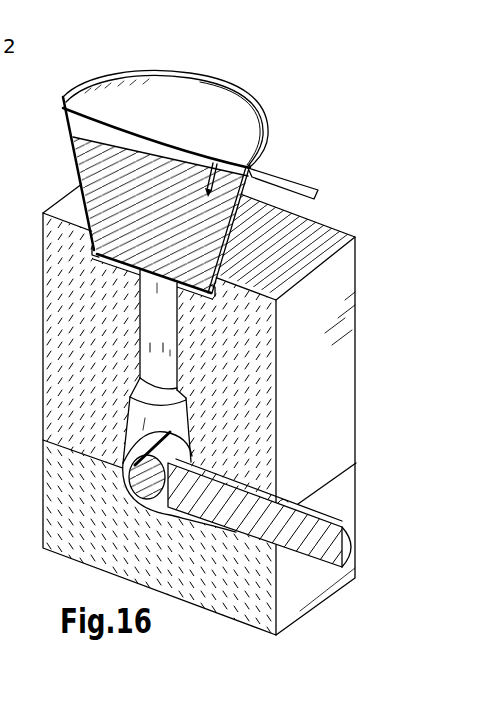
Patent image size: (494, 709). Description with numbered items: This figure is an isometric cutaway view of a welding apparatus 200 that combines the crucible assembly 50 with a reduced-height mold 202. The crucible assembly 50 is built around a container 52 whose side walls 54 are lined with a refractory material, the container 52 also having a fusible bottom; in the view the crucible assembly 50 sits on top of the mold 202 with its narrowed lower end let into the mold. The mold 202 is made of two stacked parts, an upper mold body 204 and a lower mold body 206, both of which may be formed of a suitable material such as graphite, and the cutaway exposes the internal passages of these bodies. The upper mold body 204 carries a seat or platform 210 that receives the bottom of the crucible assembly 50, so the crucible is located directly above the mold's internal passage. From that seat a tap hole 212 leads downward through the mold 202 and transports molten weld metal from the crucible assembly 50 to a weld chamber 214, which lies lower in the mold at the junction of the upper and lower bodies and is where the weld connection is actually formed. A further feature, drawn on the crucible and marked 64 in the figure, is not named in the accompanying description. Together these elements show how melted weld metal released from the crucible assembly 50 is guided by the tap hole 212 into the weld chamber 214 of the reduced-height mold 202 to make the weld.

The crucible assembly 50 is at (70, 67).
The container 52 is at (52, 153).
The side walls 54 is at (238, 240).
The pin 64 is at (243, 213).
The welding apparatus 200 is at (197, 152).
The reduced-height mold 202 is at (243, 393).
The upper mold body 204 is at (332, 366).
The lower mold body 206 is at (347, 490).
The seat or platform 210 is at (205, 300).
The tap hole 212 is at (178, 347).
The weld chamber 214 is at (229, 463).